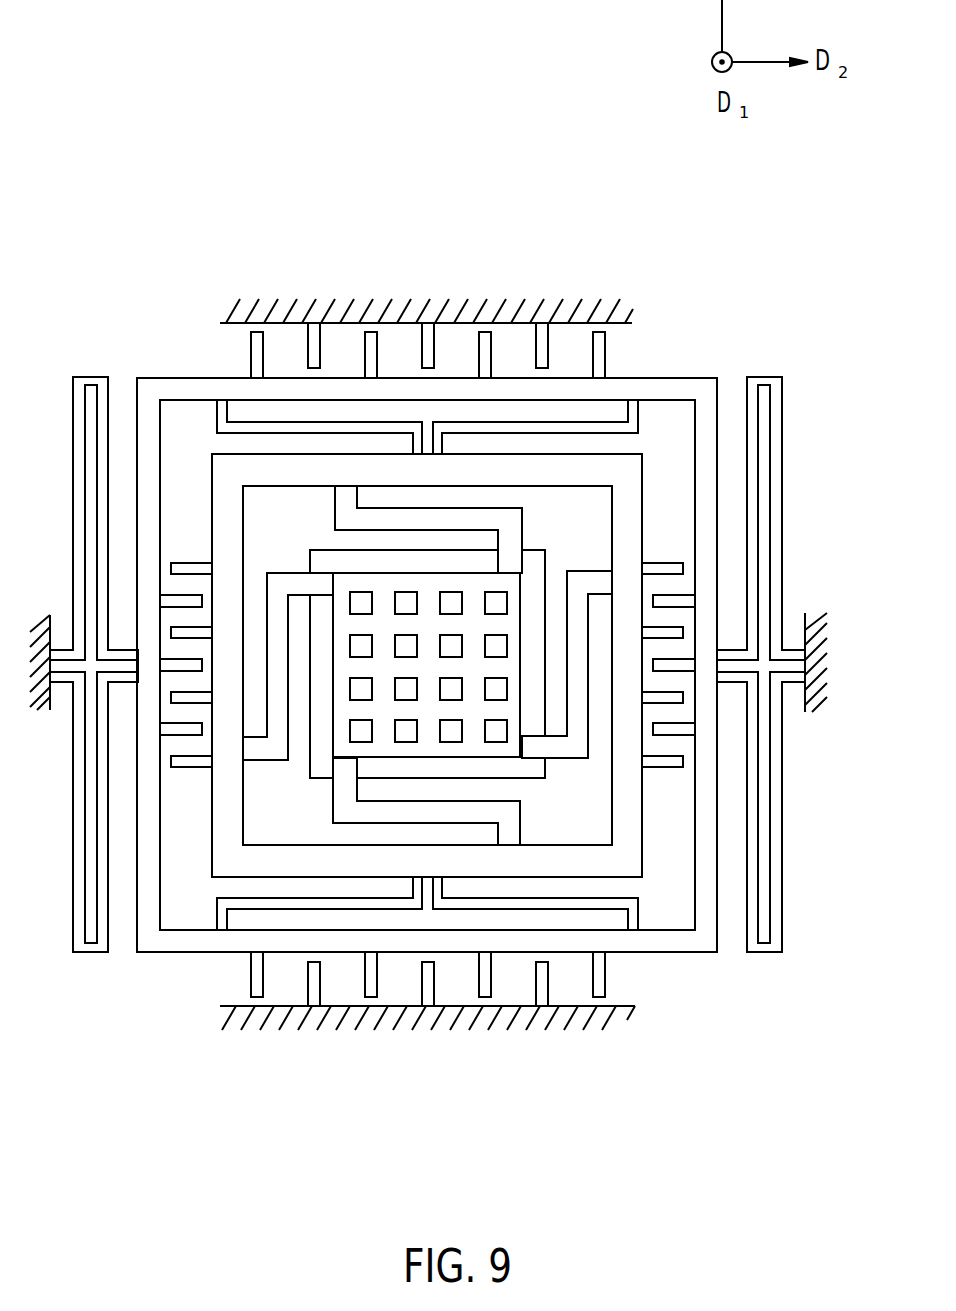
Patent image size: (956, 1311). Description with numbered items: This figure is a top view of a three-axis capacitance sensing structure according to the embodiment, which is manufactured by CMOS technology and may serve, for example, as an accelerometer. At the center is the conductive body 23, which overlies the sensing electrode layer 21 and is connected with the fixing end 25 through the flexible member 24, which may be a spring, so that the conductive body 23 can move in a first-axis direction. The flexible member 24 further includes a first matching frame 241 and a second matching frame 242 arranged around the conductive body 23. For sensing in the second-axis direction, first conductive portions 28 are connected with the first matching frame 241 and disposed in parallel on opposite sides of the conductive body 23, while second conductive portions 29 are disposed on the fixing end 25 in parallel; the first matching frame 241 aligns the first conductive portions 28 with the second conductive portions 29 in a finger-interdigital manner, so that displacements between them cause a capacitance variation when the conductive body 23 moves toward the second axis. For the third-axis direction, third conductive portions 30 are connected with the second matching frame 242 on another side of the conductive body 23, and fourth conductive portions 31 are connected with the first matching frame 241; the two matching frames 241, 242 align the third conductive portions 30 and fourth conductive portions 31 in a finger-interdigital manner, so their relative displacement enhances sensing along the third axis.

The flexible member 24 is at (473, 591).
The first matching frame 241 is at (643, 377).
The second matching frame 242 is at (643, 480).
The sensing electrode layer 21 is at (462, 551).
The conductive body 23 is at (355, 572).
The fixing end 25 is at (238, 1005).
The first conductive portions 28 is at (612, 976).
The second conductive portions 29 is at (550, 985).
The third conductive portions 30 is at (662, 565).
The fourth conductive portions 31 is at (672, 600).